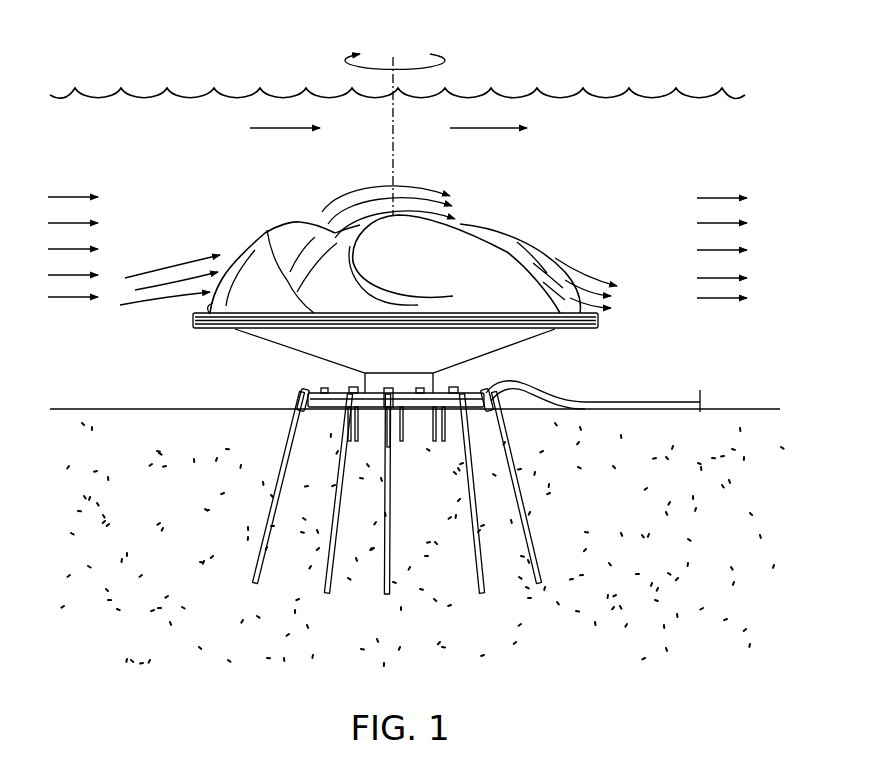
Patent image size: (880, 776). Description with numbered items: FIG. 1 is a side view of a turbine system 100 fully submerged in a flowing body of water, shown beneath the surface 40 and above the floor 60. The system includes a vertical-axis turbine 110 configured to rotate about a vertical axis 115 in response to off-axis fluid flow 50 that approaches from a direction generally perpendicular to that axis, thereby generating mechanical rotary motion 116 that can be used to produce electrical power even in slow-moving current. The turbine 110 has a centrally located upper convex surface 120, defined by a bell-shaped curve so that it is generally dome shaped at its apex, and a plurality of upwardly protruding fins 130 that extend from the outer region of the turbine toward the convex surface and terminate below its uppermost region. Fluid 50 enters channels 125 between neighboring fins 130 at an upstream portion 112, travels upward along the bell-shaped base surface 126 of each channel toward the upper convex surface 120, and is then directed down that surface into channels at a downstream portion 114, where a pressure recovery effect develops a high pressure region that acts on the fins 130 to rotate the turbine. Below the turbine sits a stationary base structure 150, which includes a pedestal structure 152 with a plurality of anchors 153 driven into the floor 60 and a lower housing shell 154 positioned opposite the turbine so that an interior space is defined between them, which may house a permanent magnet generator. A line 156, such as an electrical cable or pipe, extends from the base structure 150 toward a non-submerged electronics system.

The surface of the body of water 40 is at (227, 96).
The fluid flow 50 is at (60, 179).
The floor of the body of water 60 is at (183, 537).
The turbine system 100 is at (173, 332).
The vertical-axis turbine 110 is at (270, 205).
The upstream portion 112 is at (197, 305).
The downstream portion 114 is at (613, 322).
The vertical axis 115 is at (397, 165).
The mechanical rotary motion 116 is at (430, 55).
The upper convex surface 120 is at (378, 216).
The channels 125 is at (507, 245).
The base surface 126 is at (343, 270).
The fins 130 is at (257, 240).
The base structure 150 is at (627, 338).
The pedestal structure 152 is at (425, 393).
The anchors 153 is at (522, 518).
The lower housing shell 154 is at (490, 343).
The line 156 is at (580, 398).